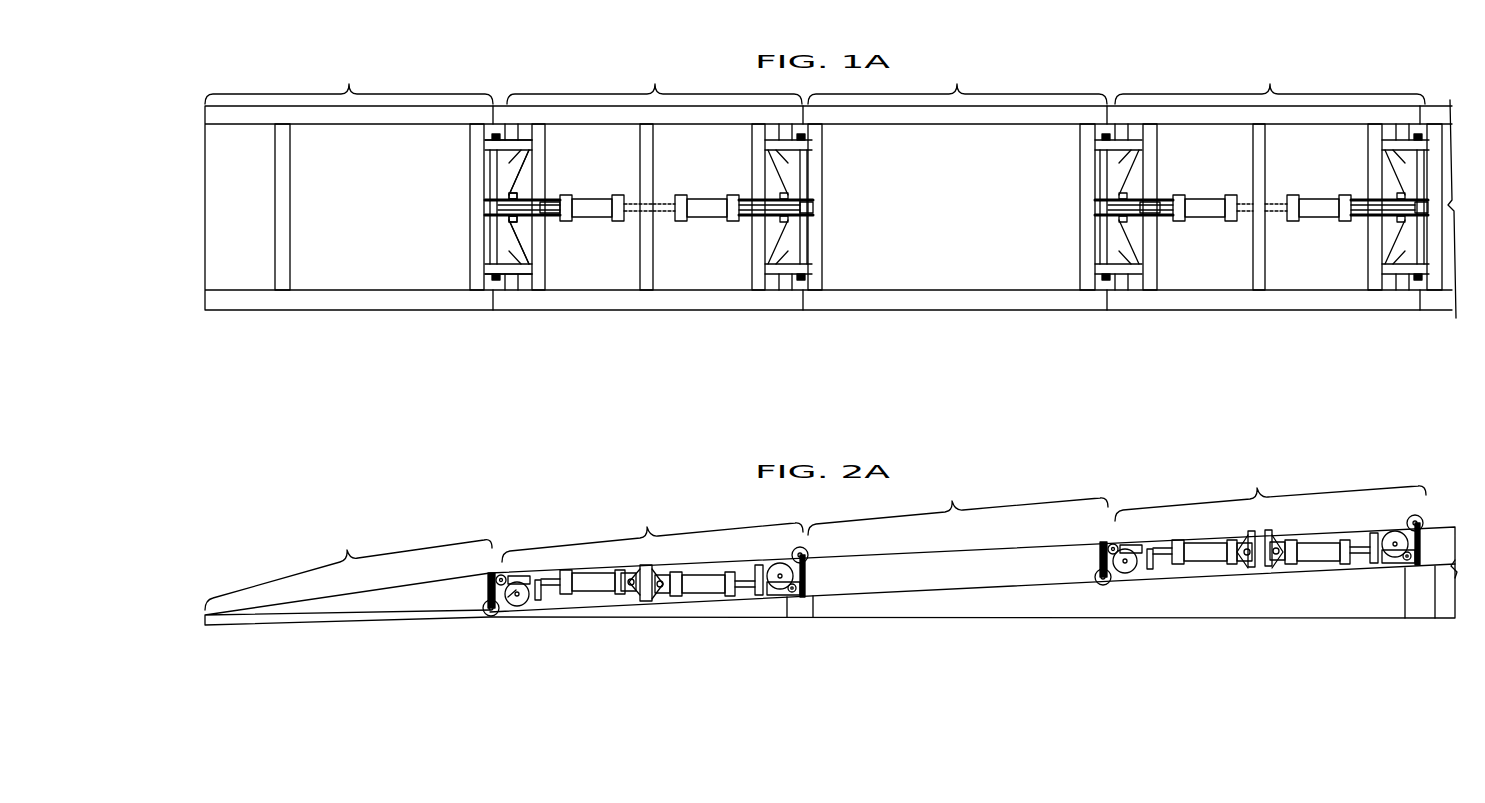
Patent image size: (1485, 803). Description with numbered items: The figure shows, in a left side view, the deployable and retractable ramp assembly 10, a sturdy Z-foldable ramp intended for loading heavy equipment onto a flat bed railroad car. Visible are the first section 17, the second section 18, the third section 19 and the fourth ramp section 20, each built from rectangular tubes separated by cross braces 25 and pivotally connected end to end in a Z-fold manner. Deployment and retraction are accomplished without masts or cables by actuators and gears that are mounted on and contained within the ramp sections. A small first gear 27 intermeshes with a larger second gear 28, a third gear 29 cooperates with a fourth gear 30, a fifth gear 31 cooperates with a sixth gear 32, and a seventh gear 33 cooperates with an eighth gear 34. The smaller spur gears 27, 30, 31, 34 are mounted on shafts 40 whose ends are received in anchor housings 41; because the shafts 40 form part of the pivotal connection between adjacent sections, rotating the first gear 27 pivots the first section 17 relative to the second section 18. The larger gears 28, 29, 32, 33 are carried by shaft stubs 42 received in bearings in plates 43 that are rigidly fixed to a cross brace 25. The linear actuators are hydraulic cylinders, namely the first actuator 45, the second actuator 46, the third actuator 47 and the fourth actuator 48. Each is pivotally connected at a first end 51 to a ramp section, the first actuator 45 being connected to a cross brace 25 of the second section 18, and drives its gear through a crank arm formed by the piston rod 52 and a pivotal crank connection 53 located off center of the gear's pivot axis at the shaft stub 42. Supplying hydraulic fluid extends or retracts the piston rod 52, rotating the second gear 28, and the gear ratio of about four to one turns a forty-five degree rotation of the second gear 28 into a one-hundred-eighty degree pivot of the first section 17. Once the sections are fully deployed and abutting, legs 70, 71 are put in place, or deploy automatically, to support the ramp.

In FIG. 1A, the ramp assembly 10 is at (1240, 50).
In FIG. 2A, the ramp assembly 10 is at (1218, 498).
In FIG. 1A, the first section 17 is at (349, 79).
In FIG. 2A, the first section 17 is at (348, 571).
In FIG. 1A, the second section 18 is at (654, 79).
In FIG. 2A, the second section 18 is at (652, 533).
In FIG. 1A, the third section 19 is at (957, 79).
In FIG. 2A, the third section 19 is at (958, 512).
In FIG. 1A, the fourth ramp section 20 is at (1270, 79).
In FIG. 2A, the fourth ramp section 20 is at (1270, 499).
In FIG. 1A, the cross braces 25 is at (287, 197).
In FIG. 1A, the first gear 27 is at (487, 207).
In FIG. 2A, the first gear 27 is at (484, 612).
In FIG. 1A, the second gear 28 is at (543, 206).
In FIG. 2A, the second gear 28 is at (522, 605).
In FIG. 1A, the third gear 29 is at (772, 204).
In FIG. 2A, the third gear 29 is at (780, 563).
In FIG. 1A, the fourth gear 30 is at (812, 208).
In FIG. 2A, the fourth gear 30 is at (800, 547).
In FIG. 1A, the fifth gear 31 is at (1097, 207).
In FIG. 2A, the fifth gear 31 is at (1097, 582).
In FIG. 1A, the sixth gear 32 is at (1148, 206).
In FIG. 2A, the sixth gear 32 is at (1127, 573).
In FIG. 1A, the seventh gear 33 is at (1388, 205).
In FIG. 2A, the seventh gear 33 is at (1398, 530).
In FIG. 1A, the eighth gear 34 is at (1420, 205).
In FIG. 2A, the eighth gear 34 is at (1420, 515).
In FIG. 1A, the shafts 40 is at (490, 165).
In FIG. 1A, the anchor housings 41 is at (490, 150).
In FIG. 1A, the shaft stubs 42 is at (512, 194).
In FIG. 2A, the shaft stubs 42 is at (514, 601).
In FIG. 1A, the plates 43 is at (525, 192).
In FIG. 1A, the first actuator 45 is at (594, 222).
In FIG. 2A, the first actuator 45 is at (594, 594).
In FIG. 1A, the second actuator 46 is at (700, 222).
In FIG. 2A, the second actuator 46 is at (698, 590).
In FIG. 1A, the third actuator 47 is at (1204, 222).
In FIG. 2A, the third actuator 47 is at (1204, 563).
In FIG. 1A, the fourth actuator 48 is at (1310, 222).
In FIG. 2A, the fourth actuator 48 is at (1310, 562).
In FIG. 2A, the first end 51 is at (630, 592).
In FIG. 2A, the piston rod 52 is at (548, 580).
In FIG. 2A, the pivotal crank connection 53 is at (496, 576).
In FIG. 2A, the leg 70 is at (795, 604).
In FIG. 2A, the leg 71 is at (1418, 600).